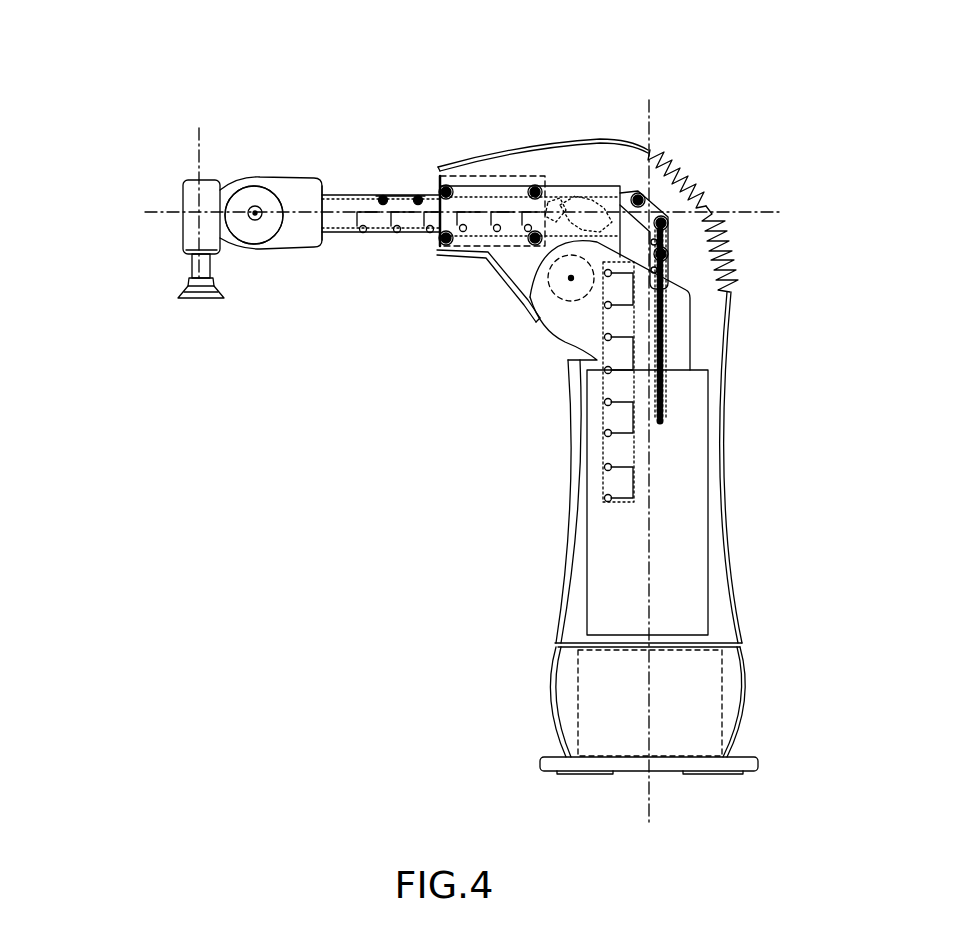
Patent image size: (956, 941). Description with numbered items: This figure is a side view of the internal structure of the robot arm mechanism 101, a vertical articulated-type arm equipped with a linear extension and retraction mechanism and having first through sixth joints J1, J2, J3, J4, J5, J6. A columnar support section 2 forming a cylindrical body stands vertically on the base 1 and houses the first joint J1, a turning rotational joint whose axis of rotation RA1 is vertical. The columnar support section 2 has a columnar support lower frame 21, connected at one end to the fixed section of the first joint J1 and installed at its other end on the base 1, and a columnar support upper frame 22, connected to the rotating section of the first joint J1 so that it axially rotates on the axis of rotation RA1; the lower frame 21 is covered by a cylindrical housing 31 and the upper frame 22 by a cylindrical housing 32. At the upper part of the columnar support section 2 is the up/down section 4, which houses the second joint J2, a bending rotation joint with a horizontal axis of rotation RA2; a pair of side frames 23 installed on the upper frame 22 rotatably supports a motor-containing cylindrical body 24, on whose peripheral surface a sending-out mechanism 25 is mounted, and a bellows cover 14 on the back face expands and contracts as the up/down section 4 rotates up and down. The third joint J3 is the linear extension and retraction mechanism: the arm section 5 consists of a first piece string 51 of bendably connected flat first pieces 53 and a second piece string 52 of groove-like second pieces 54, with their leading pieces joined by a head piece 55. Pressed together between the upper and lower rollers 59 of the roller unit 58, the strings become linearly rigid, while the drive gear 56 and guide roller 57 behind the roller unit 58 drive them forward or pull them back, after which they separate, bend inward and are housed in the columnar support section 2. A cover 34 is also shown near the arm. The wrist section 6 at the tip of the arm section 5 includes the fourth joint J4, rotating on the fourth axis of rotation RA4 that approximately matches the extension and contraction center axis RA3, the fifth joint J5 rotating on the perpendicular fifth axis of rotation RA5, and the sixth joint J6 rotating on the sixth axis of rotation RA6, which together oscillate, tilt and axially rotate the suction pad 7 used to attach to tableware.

The robot arm mechanism 101 is at (596, 62).
The base 1 is at (759, 758).
The columnar support section 2 is at (744, 504).
The up/down section 4 is at (716, 178).
The arm section 5 is at (408, 185).
The wrist section 6 is at (272, 164).
The suction pad 7 is at (198, 302).
The bellows cover 14 is at (723, 245).
The columnar support lower frame 21 is at (578, 661).
The columnar support upper frame 22 is at (568, 385).
The side frames 23 is at (560, 340).
The cylindrical body 24 is at (548, 320).
The sending-out mechanism 25 is at (490, 258).
The cylindrical housing 31 is at (558, 711).
The cylindrical housing 32 is at (568, 585).
The cover 34 is at (500, 158).
The first piece string 51 is at (663, 442).
The second piece string 52 is at (617, 512).
The first pieces 53 is at (668, 402).
The second pieces 54 is at (603, 478).
The head piece 55 is at (345, 237).
The drive gear 56 is at (590, 215).
The guide roller 57 is at (597, 210).
The roller unit 58 is at (520, 176).
The upper and lower rollers 59 is at (452, 186).
The first joint J1 is at (756, 646).
The second joint J2 is at (521, 305).
The third joint J3 is at (432, 244).
The fourth joint J4 is at (323, 184).
The fifth joint J5 is at (252, 246).
The sixth joint J6 is at (182, 258).
The axis of rotation RA1 is at (645, 449).
The axis of rotation RA2 is at (543, 296).
The extension and contraction center axis RA3 is at (428, 212).
The fourth axis of rotation RA4 is at (428, 212).
The fifth axis of rotation RA5 is at (257, 215).
The sixth axis of rotation RA6 is at (197, 192).